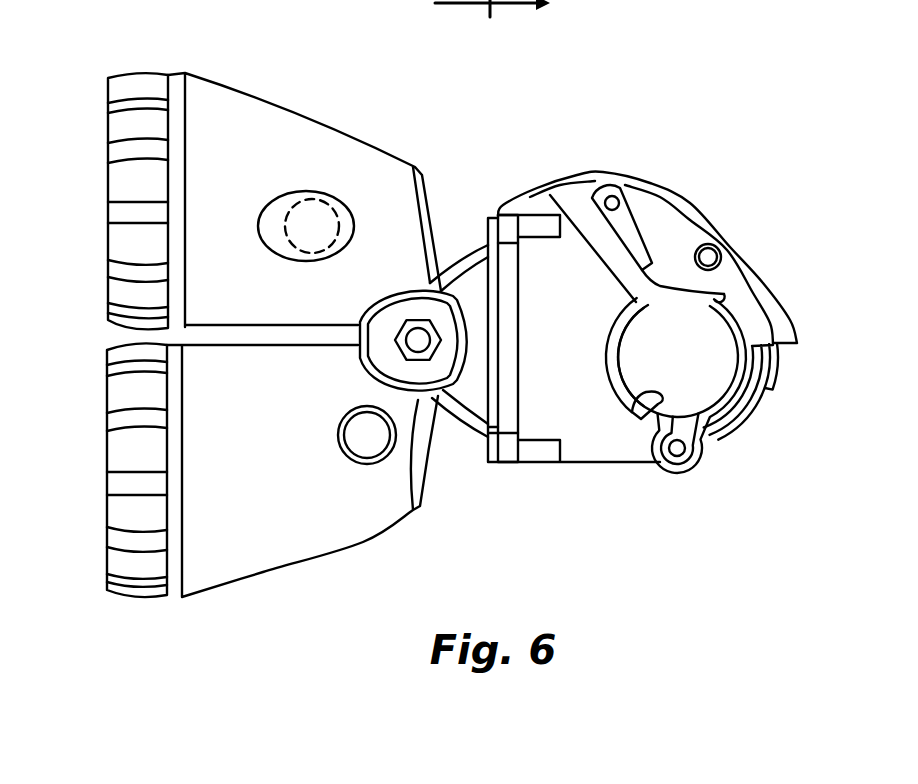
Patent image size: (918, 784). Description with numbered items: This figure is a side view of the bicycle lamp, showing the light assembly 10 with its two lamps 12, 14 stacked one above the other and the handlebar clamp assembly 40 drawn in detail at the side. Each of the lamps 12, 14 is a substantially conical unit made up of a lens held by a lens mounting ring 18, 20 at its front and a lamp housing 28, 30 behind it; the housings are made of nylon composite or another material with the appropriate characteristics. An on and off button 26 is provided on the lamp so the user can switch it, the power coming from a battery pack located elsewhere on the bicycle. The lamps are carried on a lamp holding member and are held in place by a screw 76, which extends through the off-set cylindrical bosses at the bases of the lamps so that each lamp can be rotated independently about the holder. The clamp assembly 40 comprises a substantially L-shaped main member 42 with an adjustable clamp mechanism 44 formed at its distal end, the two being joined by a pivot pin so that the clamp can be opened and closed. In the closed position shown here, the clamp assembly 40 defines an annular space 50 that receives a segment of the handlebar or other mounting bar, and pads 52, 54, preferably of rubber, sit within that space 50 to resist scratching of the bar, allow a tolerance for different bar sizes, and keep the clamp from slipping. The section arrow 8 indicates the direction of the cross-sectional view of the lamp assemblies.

The section view direction arrow 8 is at (492, 23).
The light assembly 10 is at (143, 50).
The lamp 12 is at (103, 219).
The lamp 14 is at (103, 516).
The lens mounting ring 18 is at (135, 120).
The lens mounting ring 20 is at (132, 570).
The on and off button 26 is at (318, 220).
The lamp housing 28 is at (263, 108).
The lamp housing 30 is at (248, 528).
The handlebar clamp assembly 40 is at (655, 175).
The main member 42 is at (757, 405).
The adjustable clamp mechanism 44 is at (743, 242).
The annular space 50 is at (693, 367).
The pad 52 is at (658, 397).
The pad 54 is at (712, 415).
The screw 76 is at (424, 332).